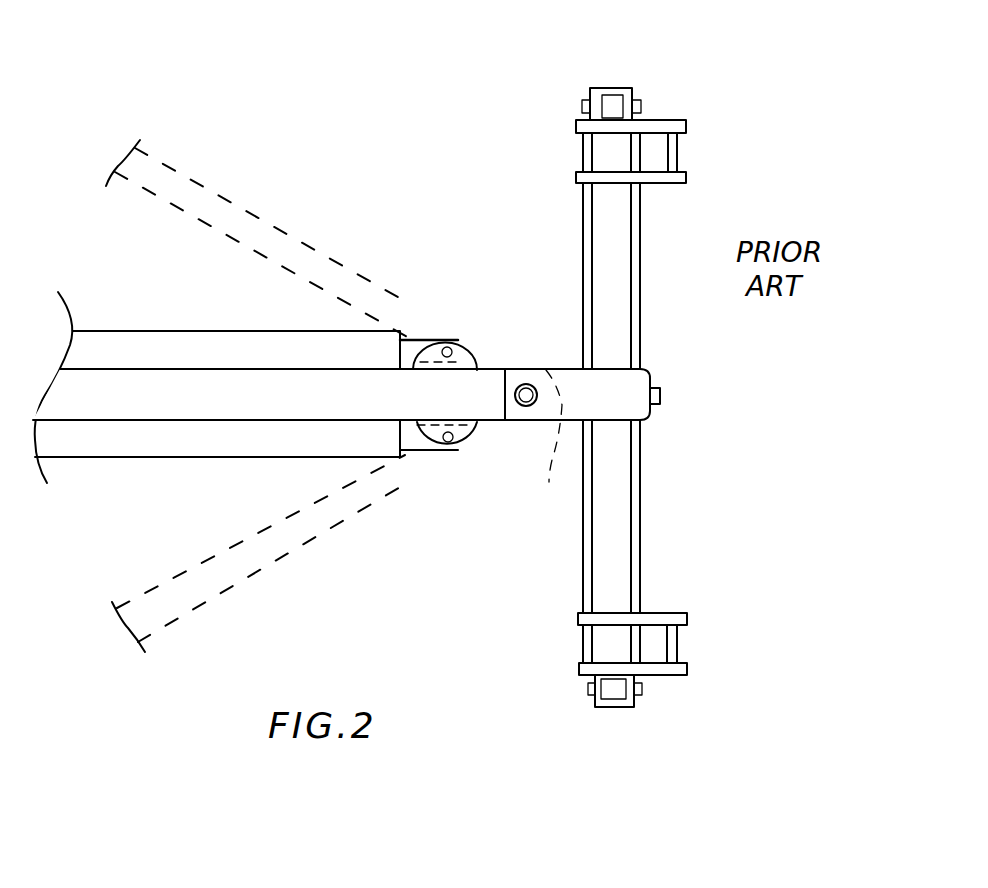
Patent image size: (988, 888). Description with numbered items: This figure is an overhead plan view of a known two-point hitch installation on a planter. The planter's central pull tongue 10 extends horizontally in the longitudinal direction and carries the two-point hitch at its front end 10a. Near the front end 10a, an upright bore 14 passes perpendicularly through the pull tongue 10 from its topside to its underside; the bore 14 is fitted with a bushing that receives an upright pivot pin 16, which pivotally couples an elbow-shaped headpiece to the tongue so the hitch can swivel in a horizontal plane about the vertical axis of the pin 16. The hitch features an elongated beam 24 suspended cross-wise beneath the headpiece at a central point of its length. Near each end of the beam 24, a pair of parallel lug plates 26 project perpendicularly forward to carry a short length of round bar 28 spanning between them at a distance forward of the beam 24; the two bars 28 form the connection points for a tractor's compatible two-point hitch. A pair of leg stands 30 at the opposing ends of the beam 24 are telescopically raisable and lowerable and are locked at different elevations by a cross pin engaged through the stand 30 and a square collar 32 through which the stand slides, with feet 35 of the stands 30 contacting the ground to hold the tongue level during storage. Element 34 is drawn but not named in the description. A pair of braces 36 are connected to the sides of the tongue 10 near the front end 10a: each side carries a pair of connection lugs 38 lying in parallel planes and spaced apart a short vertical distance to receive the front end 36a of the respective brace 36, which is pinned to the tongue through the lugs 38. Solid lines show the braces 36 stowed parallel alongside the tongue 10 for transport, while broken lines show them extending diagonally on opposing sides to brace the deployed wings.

The central pull tongue 10 is at (147, 392).
The front end of the pull tongue 10a is at (544, 443).
The upright bore 14 is at (527, 408).
The upright pivot pin 16 is at (524, 384).
The elongated beam 24 is at (618, 249).
The lug plates 26 is at (637, 178).
The round bar 28 is at (673, 155).
The leg stand 30 is at (610, 110).
The locking pin and square collar 32 is at (637, 103).
The left clamp lug 34 is at (590, 100).
The feet 35 is at (626, 96).
The braces 36 is at (243, 334).
The front end of the brace 36a is at (410, 340).
The connection lugs 38 is at (456, 346).